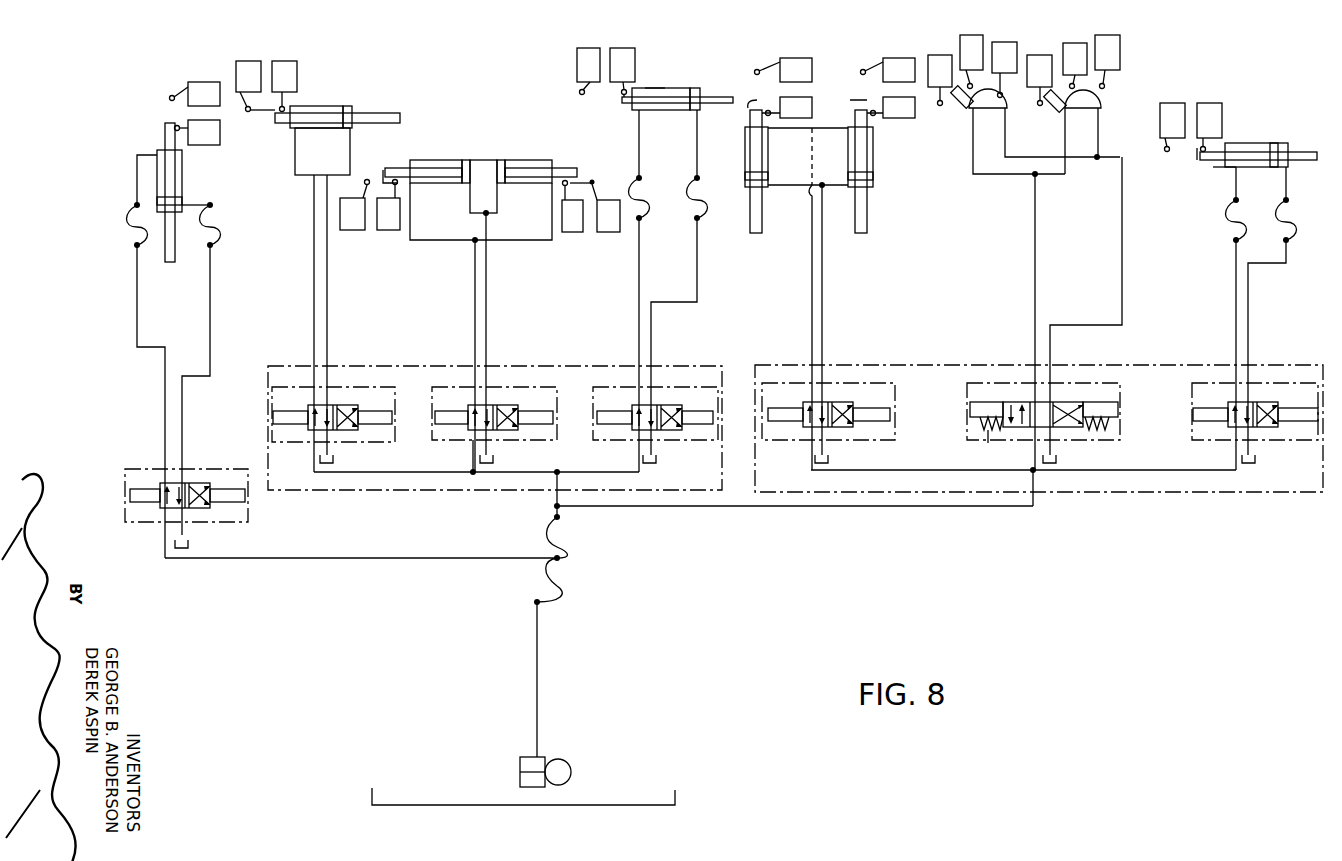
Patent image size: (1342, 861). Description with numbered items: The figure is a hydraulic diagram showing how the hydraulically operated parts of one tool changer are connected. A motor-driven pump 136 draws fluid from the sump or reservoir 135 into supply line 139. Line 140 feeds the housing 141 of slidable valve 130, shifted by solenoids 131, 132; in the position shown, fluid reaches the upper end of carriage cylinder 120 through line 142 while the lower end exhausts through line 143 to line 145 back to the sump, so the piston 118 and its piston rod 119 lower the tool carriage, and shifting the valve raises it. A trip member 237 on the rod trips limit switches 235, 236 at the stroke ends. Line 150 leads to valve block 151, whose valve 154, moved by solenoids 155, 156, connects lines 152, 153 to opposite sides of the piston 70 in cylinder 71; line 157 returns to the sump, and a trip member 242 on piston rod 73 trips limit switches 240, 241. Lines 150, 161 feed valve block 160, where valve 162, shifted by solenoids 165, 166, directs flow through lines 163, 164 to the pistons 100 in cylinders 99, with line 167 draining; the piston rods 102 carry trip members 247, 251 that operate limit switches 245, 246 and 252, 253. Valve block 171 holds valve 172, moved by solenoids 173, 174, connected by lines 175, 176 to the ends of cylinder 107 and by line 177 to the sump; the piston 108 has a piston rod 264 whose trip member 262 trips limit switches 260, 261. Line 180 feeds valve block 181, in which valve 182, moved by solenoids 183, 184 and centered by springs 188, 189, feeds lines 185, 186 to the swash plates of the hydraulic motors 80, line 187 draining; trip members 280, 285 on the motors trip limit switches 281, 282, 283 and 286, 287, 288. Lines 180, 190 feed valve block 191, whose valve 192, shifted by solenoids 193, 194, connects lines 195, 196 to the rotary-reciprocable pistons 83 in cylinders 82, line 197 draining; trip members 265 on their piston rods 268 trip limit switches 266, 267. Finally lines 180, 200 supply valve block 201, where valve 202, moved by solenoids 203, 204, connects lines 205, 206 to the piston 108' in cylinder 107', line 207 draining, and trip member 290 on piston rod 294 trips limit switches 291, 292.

The piston 70 is at (347, 106).
The cylinder 71 is at (325, 106).
The piston rod 73 is at (320, 123).
The hydraulic motor 80 is at (1007, 105).
The cylinder 82 is at (750, 141).
The rotary-reciprocable piston 83 is at (750, 175).
The cylinder 99 is at (441, 160).
The piston 100 is at (506, 159).
The piston rod 102 is at (559, 167).
The cylinder 107 is at (677, 82).
The piston 108 is at (718, 91).
The cylinder 107' is at (1258, 138).
The piston 108' is at (1283, 131).
The piston 118 is at (182, 199).
The piston rod 119 is at (165, 137).
The cylinder 120 is at (182, 170).
The slidable valve 130 is at (210, 483).
The solenoid 131 is at (238, 503).
The solenoid 132 is at (135, 503).
The sump or reservoir 135 is at (678, 793).
The motor-driven pump 136 is at (563, 760).
The supply line 139 is at (538, 682).
The line 140 is at (453, 556).
The housing 141 is at (252, 513).
The line 142 is at (138, 303).
The line 143 is at (212, 323).
The line 145 is at (186, 529).
The line 150 is at (522, 473).
The valve block 151 is at (380, 387).
The line 152 is at (314, 298).
The line 153 is at (329, 298).
The valve 154 is at (345, 405).
The solenoid 155 is at (381, 421).
The solenoid 156 is at (278, 417).
The line 157 is at (330, 449).
The valve block 160 is at (543, 387).
The line 161 is at (472, 452).
The valve 162 is at (504, 405).
The line 163 is at (475, 298).
The line 164 is at (487, 298).
The solenoid 165 is at (436, 416).
The solenoid 166 is at (547, 418).
The line 167 is at (492, 451).
The valve block 171 is at (663, 386).
The valve 172 is at (674, 407).
The solenoid 173 is at (712, 412).
The solenoid 174 is at (600, 414).
The line 175 is at (639, 298).
The line 176 is at (699, 262).
The line 177 is at (657, 452).
The line 180 is at (779, 507).
The valve block 181 is at (1072, 383).
The valve 182 is at (1077, 413).
The solenoid 183 is at (1117, 403).
The solenoid 184 is at (970, 410).
The line 185 is at (1035, 270).
The line 186 is at (1123, 270).
The line 187 is at (1057, 452).
The spring 188 is at (988, 442).
The spring 189 is at (1110, 425).
The line 190 is at (935, 472).
The valve block 191 is at (867, 383).
The valve 192 is at (837, 402).
The solenoid 193 is at (882, 408).
The solenoid 194 is at (768, 415).
The line 195 is at (811, 285).
The line 196 is at (823, 285).
The line 197 is at (829, 452).
The line 200 is at (1133, 472).
The valve block 201 is at (1275, 383).
The valve 202 is at (1270, 428).
The solenoid 203 is at (1293, 412).
The solenoid 204 is at (1196, 412).
The line 205 is at (1236, 300).
The line 206 is at (1250, 300).
The line 207 is at (1257, 458).
The limit switch 235 is at (203, 82).
The limit switch 236 is at (221, 135).
The trip member 237 is at (180, 126).
The limit switch 240 is at (248, 61).
The limit switch 241 is at (296, 62).
The trip member 242 is at (276, 110).
The limit switch 245 is at (353, 232).
The limit switch 246 is at (388, 232).
The trip member 247 is at (383, 172).
The trip member 251 is at (578, 184).
The limit switch 252 is at (569, 232).
The limit switch 253 is at (606, 232).
The limit switch 260 is at (576, 57).
The limit switch 261 is at (621, 48).
The trip member 262 is at (622, 96).
The piston rod 264 is at (649, 88).
The trip member 265 is at (807, 100).
The limit switch 266 is at (795, 58).
The limit switch 267 is at (800, 98).
The piston rod 268 is at (857, 150).
The trip member 280 is at (964, 110).
The limit switch 281 is at (937, 55).
The limit switch 282 is at (970, 38).
The limit switch 283 is at (1014, 43).
The trip member 285 is at (1053, 112).
The limit switch 286 is at (1050, 55).
The limit switch 287 is at (1087, 43).
The limit switch 288 is at (1122, 42).
The trip member 290 is at (1197, 153).
The limit switch 291 is at (1168, 103).
The limit switch 292 is at (1207, 103).
The piston rod 294 is at (1217, 167).